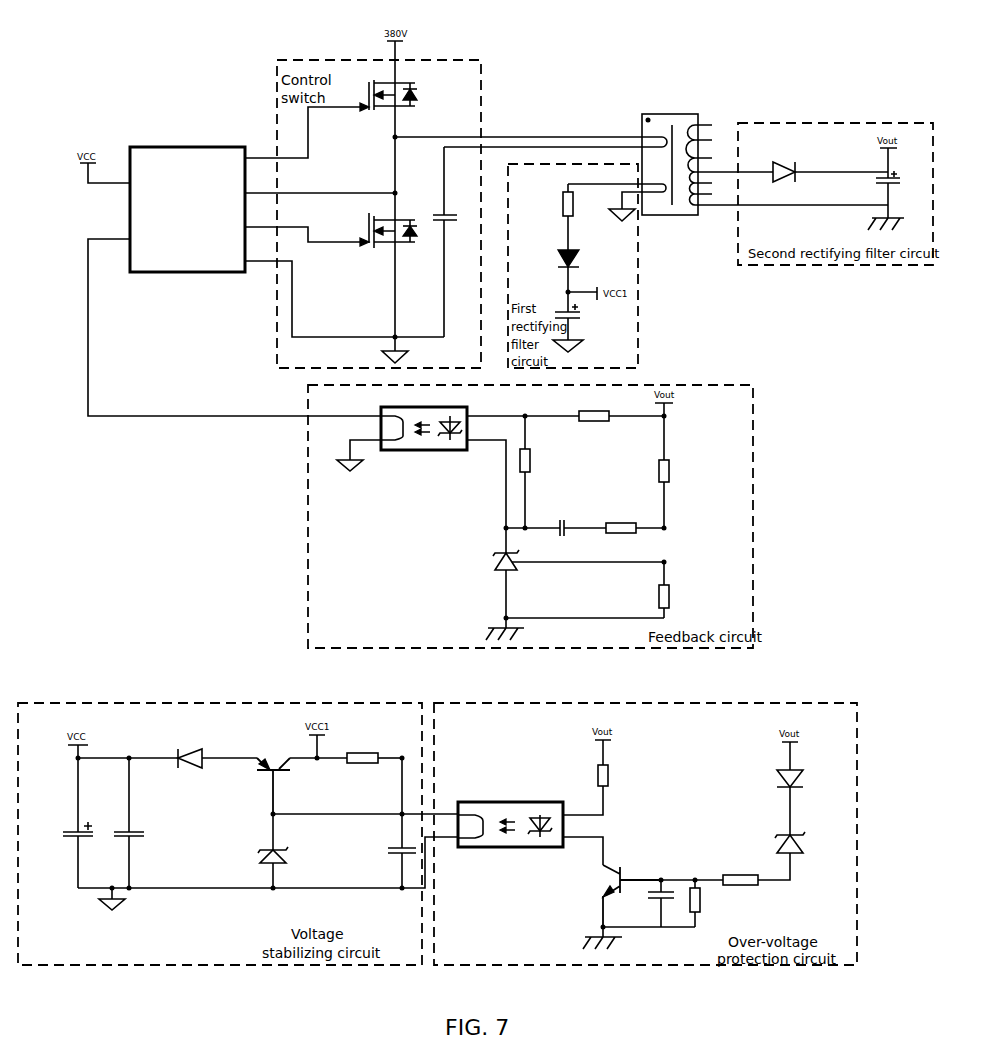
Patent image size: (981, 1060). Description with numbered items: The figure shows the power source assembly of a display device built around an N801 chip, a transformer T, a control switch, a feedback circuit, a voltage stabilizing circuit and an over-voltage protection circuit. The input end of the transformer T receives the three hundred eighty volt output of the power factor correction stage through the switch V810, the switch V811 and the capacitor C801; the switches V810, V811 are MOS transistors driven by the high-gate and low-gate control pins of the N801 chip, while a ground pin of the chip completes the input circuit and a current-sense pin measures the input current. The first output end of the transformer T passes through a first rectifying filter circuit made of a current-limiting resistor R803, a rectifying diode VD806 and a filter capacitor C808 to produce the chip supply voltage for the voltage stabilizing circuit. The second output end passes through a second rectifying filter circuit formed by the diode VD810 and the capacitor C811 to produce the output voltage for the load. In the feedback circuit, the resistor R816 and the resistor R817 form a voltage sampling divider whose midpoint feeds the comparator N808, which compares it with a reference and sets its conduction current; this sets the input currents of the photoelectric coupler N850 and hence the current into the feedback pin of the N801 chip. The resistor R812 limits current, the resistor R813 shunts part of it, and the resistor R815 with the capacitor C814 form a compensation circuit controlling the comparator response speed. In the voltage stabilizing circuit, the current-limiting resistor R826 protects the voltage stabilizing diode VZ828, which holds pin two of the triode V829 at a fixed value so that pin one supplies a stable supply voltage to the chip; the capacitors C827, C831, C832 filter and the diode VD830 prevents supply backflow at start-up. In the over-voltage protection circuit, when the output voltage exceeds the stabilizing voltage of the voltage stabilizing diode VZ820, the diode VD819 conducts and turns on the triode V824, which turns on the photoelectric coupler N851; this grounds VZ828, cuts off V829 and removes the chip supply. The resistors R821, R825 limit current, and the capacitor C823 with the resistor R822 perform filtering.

The N801 chip N801 is at (189, 203).
The switch V810 is at (386, 89).
The switch V811 is at (383, 224).
The capacitor C801 is at (436, 242).
The transformer T is at (677, 156).
The resistor R803 is at (584, 217).
The diode VD806 is at (589, 281).
The capacitor C808 is at (585, 328).
The diode VD810 is at (826, 178).
The capacitor C811 is at (904, 194).
The photoelectric coupler N850 is at (426, 421).
The resistor R812 is at (594, 409).
The resistor R813 is at (543, 472).
The resistor R816 is at (680, 472).
The capacitor C814 is at (563, 520).
The resistor R815 is at (621, 521).
The comparator N808 is at (577, 553).
The resistor R817 is at (680, 590).
The capacitor C832 is at (60, 823).
The capacitor C831 is at (141, 823).
The diode VD830 is at (212, 750).
The triode V829 is at (273, 777).
The resistor R826 is at (374, 751).
The voltage stabilizing diode VZ828 is at (251, 851).
The capacitor C827 is at (388, 868).
The photoelectric coupler N851 is at (513, 817).
The resistor R825 is at (619, 763).
The triode V824 is at (623, 890).
The capacitor C823 is at (661, 914).
The resistor R822 is at (711, 903).
The resistor R821 is at (740, 873).
The diode VD819 is at (808, 764).
The voltage stabilizing diode VZ820 is at (809, 831).